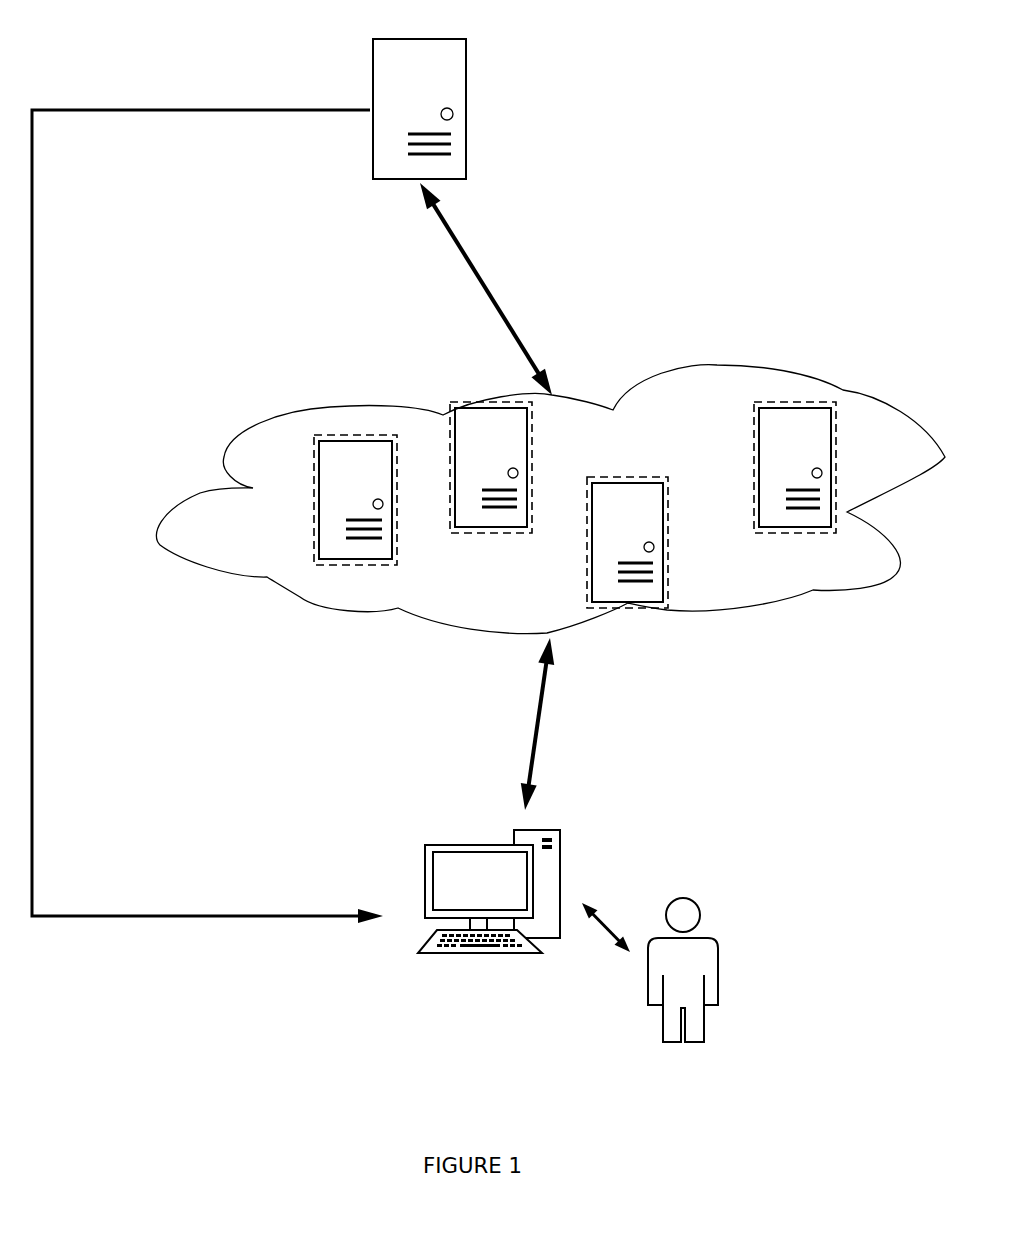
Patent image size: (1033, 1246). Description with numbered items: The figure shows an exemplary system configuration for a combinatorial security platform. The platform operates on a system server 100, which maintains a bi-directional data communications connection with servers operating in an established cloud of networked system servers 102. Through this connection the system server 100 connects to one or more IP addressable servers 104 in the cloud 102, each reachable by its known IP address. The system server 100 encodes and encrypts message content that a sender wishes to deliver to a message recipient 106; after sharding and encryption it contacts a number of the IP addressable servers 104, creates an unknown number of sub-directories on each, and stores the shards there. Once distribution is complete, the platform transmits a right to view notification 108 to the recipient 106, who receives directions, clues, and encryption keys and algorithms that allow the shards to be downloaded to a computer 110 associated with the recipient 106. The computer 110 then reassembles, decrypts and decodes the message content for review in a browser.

The system server 100 is at (466, 60).
The cloud of networked system servers 102 is at (713, 360).
The IP addressable server 104 is at (783, 537).
The message recipient 106 is at (720, 955).
The right to view notification 108 is at (205, 965).
The computer 110 is at (565, 840).